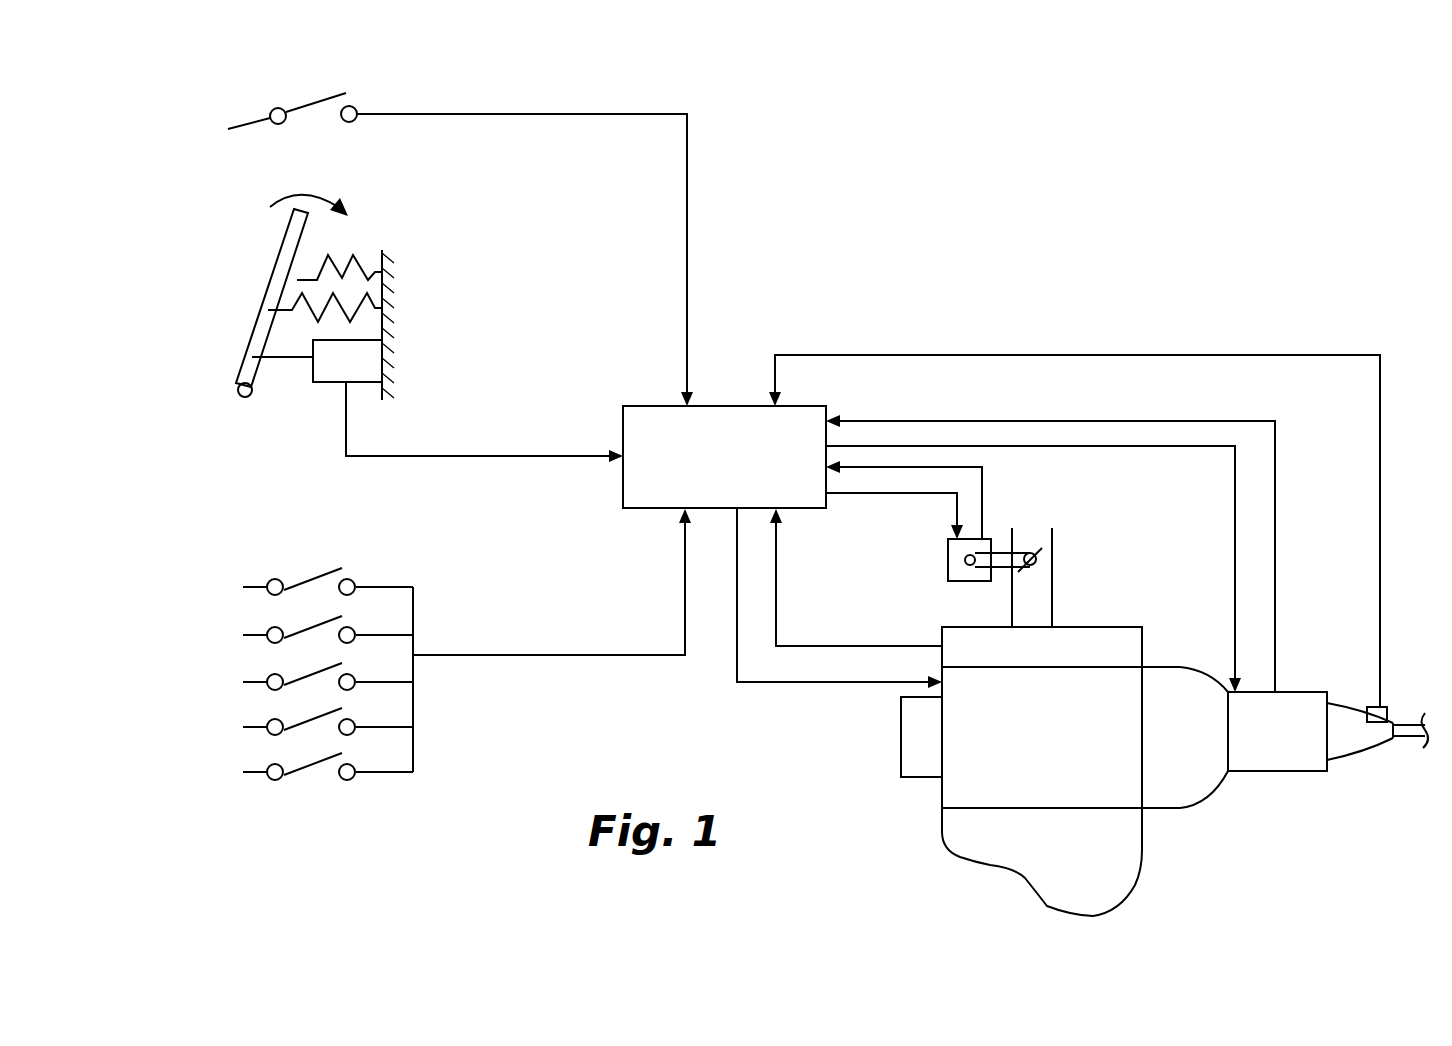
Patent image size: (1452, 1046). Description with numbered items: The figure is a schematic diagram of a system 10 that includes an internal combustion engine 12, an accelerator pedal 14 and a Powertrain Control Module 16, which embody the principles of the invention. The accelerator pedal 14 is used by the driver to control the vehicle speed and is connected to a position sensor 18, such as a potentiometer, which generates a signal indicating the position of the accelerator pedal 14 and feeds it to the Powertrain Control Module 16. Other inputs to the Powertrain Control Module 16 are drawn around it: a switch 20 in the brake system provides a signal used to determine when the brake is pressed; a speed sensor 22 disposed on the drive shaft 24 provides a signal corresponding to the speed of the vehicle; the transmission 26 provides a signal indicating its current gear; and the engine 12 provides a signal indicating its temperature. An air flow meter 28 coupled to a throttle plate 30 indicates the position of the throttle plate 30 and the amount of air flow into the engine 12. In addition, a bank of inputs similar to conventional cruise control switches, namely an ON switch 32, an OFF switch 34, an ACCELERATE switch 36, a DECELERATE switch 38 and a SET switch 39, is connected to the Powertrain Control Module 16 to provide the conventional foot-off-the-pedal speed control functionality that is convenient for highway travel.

The system 10 is at (1010, 275).
The internal combustion engine 12 is at (937, 790).
The accelerator pedal 14 is at (263, 280).
The Powertrain Control Module 16 is at (658, 405).
The position sensor 18 is at (358, 385).
The switch 20 is at (331, 100).
The speed sensor 22 is at (1373, 705).
The drive shaft 24 is at (1357, 753).
The transmission 26 is at (1273, 773).
The air flow meter 28 is at (948, 555).
The throttle plate 30 is at (1040, 550).
The ON switch 32 is at (317, 573).
The OFF switch 34 is at (330, 620).
The ACCELERATE switch 36 is at (330, 660).
The DECELERATE switch 38 is at (330, 708).
The SET switch 39 is at (330, 753).